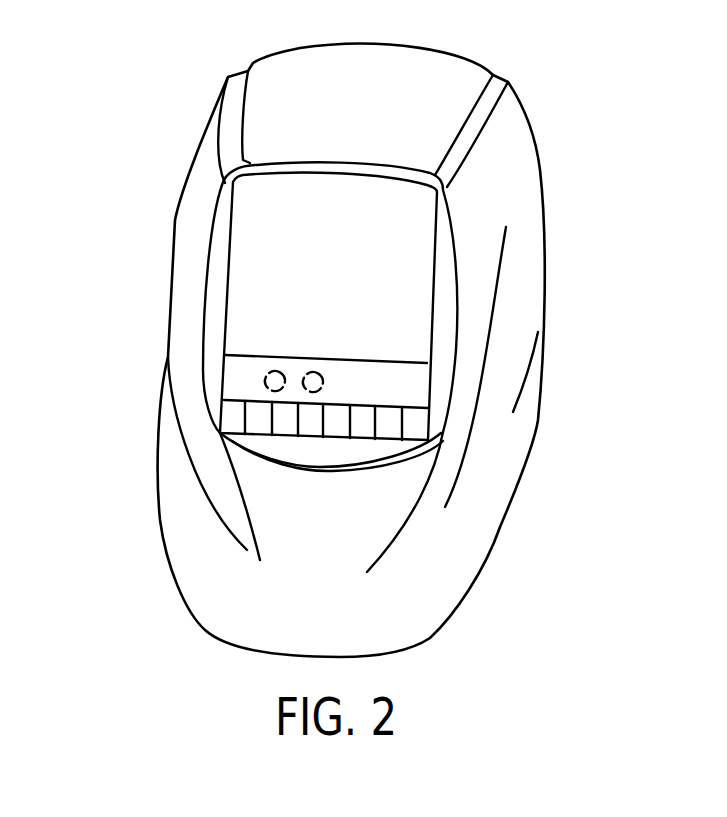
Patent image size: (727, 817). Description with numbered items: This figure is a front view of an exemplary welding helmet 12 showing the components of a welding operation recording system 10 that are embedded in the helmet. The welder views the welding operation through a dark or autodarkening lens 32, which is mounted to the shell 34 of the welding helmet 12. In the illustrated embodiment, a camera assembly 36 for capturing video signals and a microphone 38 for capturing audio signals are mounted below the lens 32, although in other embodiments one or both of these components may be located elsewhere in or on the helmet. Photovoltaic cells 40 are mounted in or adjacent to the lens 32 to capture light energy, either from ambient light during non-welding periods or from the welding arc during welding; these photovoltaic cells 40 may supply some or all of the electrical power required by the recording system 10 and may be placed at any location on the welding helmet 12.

The welding operation recording system 10 is at (150, 320).
The welding helmet 12 is at (490, 51).
The autodarkening lens 32 is at (260, 248).
The shell 34 is at (525, 277).
The camera assembly 36 is at (315, 370).
The microphone 38 is at (273, 370).
The photovoltaic cells 40 is at (287, 425).